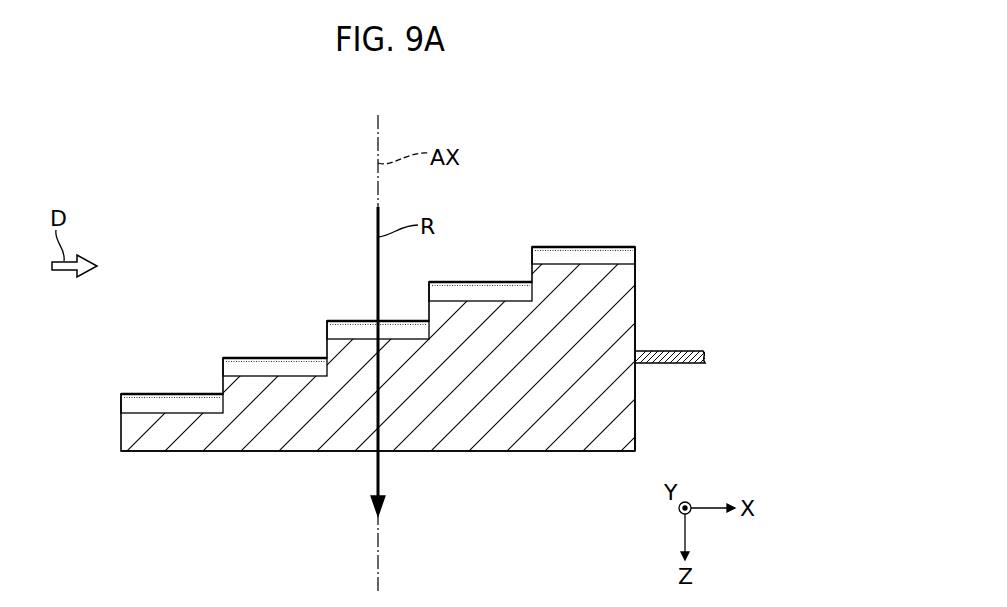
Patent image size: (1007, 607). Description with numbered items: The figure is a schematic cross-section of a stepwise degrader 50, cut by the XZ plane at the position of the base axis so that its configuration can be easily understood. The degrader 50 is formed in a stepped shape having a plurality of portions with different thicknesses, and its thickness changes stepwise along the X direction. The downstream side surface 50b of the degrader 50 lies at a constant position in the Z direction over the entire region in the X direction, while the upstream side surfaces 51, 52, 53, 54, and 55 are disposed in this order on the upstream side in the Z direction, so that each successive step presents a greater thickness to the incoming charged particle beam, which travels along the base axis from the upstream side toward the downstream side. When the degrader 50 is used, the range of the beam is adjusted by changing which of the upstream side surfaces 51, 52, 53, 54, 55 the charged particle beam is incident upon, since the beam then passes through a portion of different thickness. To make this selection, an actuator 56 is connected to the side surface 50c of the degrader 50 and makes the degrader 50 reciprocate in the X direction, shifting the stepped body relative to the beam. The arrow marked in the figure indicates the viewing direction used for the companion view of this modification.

The degrader 50 is at (660, 297).
The upstream side surface 51 is at (178, 411).
The upstream side surface 52 is at (281, 374).
The upstream side surface 53 is at (357, 337).
The upstream side surface 54 is at (480, 299).
The upstream side surface 55 is at (585, 262).
The actuator 56 is at (683, 350).
The downstream side surface 50b is at (527, 455).
The side surface 50c is at (637, 412).